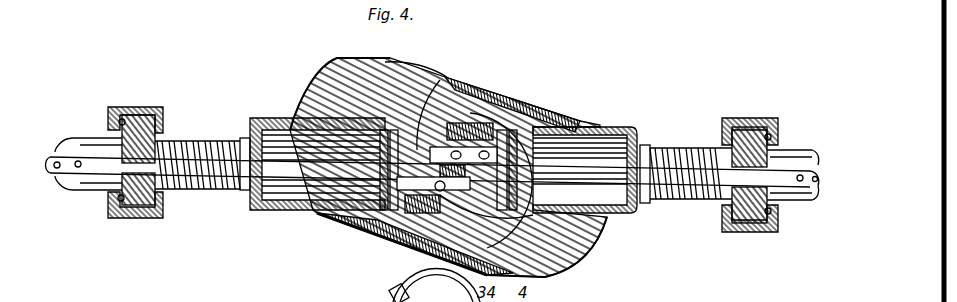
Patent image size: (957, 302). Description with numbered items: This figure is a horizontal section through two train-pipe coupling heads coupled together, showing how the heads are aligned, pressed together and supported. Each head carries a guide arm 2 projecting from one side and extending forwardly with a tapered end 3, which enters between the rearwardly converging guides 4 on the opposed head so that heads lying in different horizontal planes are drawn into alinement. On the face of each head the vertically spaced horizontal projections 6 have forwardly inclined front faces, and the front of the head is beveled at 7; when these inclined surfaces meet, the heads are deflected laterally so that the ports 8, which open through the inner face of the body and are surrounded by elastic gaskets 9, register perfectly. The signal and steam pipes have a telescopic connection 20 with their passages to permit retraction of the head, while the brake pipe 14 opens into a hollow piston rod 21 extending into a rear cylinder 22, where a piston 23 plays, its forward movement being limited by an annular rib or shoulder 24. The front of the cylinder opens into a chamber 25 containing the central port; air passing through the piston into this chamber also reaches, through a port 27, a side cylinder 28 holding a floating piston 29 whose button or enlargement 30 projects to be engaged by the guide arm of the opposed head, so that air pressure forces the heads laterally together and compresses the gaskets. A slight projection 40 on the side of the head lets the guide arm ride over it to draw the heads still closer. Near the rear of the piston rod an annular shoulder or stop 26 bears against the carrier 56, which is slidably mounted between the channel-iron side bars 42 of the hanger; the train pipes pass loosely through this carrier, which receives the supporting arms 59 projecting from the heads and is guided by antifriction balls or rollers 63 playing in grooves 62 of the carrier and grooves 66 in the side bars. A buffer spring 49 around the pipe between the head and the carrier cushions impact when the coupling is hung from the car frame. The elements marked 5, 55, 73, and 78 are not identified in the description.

The guide arm 2 is at (360, 72).
The tapered end 3 is at (123, 163).
The guides 4 is at (430, 75).
The pin 5 is at (755, 232).
The horizontal projections 6 is at (769, 118).
The beveled front 7 is at (445, 135).
The ports 8 is at (463, 156).
The elastic gaskets 9 is at (483, 156).
The brake pipe 14 is at (88, 145).
The telescopic connection 20 is at (400, 213).
The hollow piston rod 21 is at (302, 170).
The rear cylinder 22 is at (290, 128).
The piston 23 is at (378, 193).
The annular rib or shoulder 24 is at (560, 120).
The chamber 25 is at (462, 122).
The annular shoulder or stop 26 is at (246, 140).
The port 27 is at (520, 112).
The side cylinder 28 is at (372, 218).
The floating piston 29 is at (470, 124).
The button or enlargement 30 is at (483, 120).
The projection 40 is at (525, 118).
The side bars 42 is at (133, 110).
The buffer spring 49 is at (235, 190).
The support 55 is at (778, 0).
The carrier 56 is at (110, 205).
The supporting arms 59 is at (112, 140).
The grooves 62 is at (165, 121).
The antifriction balls or rollers 63 is at (158, 112).
The grooves 66 is at (130, 108).
The shaft end 73 is at (805, 165).
The shaft tip 78 is at (82, 176).